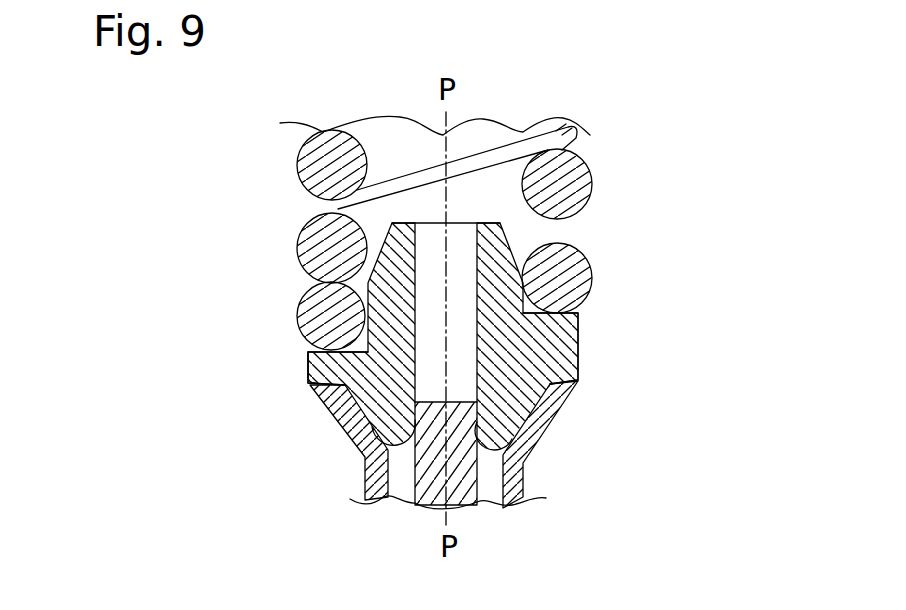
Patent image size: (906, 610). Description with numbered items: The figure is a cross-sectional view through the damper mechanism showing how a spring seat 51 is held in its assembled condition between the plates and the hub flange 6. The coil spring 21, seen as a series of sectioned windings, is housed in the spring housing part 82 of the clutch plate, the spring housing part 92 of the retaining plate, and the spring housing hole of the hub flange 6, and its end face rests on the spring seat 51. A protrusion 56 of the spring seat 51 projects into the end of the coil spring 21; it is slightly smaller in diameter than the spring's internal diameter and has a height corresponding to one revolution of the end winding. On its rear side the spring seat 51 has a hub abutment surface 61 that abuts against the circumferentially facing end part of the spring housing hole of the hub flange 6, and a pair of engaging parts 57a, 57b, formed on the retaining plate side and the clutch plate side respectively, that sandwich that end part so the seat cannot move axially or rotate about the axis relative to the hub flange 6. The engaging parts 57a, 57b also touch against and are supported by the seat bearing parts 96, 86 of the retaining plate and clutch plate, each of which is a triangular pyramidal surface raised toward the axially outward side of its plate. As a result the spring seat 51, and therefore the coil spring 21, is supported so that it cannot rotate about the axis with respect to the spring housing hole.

The hub flange 6 is at (425, 482).
The coil spring 21 is at (297, 250).
The spring seat 51 is at (597, 342).
The protrusion 56 is at (533, 240).
The engaging part 57a is at (325, 372).
The engaging part 57b is at (537, 435).
The hub abutment surface 61 is at (415, 420).
The spring housing part 82 is at (640, 258).
The seat bearing part 86 is at (547, 403).
The spring housing part 92 is at (265, 297).
The seat bearing part 96 is at (330, 400).